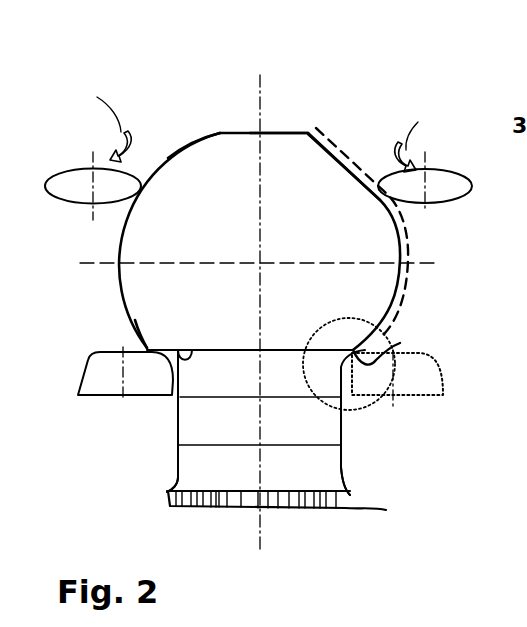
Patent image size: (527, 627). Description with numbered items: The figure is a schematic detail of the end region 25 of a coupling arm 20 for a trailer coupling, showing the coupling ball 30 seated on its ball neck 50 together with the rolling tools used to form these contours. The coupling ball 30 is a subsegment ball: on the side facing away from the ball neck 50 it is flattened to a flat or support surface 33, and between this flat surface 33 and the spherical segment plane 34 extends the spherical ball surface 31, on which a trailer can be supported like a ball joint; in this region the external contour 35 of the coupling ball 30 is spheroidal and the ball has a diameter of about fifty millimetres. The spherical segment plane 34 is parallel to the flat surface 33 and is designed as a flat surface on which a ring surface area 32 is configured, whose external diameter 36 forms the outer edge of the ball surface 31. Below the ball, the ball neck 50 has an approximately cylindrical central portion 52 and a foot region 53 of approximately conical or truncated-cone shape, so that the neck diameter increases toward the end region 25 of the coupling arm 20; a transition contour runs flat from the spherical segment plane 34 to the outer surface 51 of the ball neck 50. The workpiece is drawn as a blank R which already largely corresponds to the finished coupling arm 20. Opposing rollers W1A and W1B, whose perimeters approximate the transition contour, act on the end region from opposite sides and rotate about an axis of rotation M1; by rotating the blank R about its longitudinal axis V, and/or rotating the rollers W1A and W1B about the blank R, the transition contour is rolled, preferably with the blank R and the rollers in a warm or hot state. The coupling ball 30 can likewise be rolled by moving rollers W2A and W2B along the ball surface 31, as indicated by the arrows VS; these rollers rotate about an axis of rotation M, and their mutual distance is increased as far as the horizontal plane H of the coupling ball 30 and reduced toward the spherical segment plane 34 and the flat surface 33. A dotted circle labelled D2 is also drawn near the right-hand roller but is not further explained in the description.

The coupling arm 20 is at (246, 511).
The end region 25 is at (350, 498).
The coupling ball 30 is at (215, 126).
The spherical ball surface 31 is at (360, 158).
The ring surface area 32 is at (178, 348).
The flat surface 33 is at (283, 133).
The spherical segment plane 34 is at (217, 347).
The external contour 35 is at (170, 157).
The external diameter 36 is at (147, 350).
The ball neck 50 is at (240, 422).
The outer surface 51 is at (340, 470).
The central portion 52 is at (193, 425).
The foot region 53 is at (172, 477).
The longitudinal axis V is at (263, 80).
The horizontal plane H is at (92, 261).
The blank R is at (340, 134).
The axis of rotation M is at (92, 212).
The axis of rotation M1 is at (118, 400).
The arrows VS is at (260, 122).
The roller W2A is at (72, 173).
The roller W2B is at (450, 168).
The roller W1A is at (92, 367).
The roller W1B is at (441, 380).
The diameter circle D2 is at (396, 333).